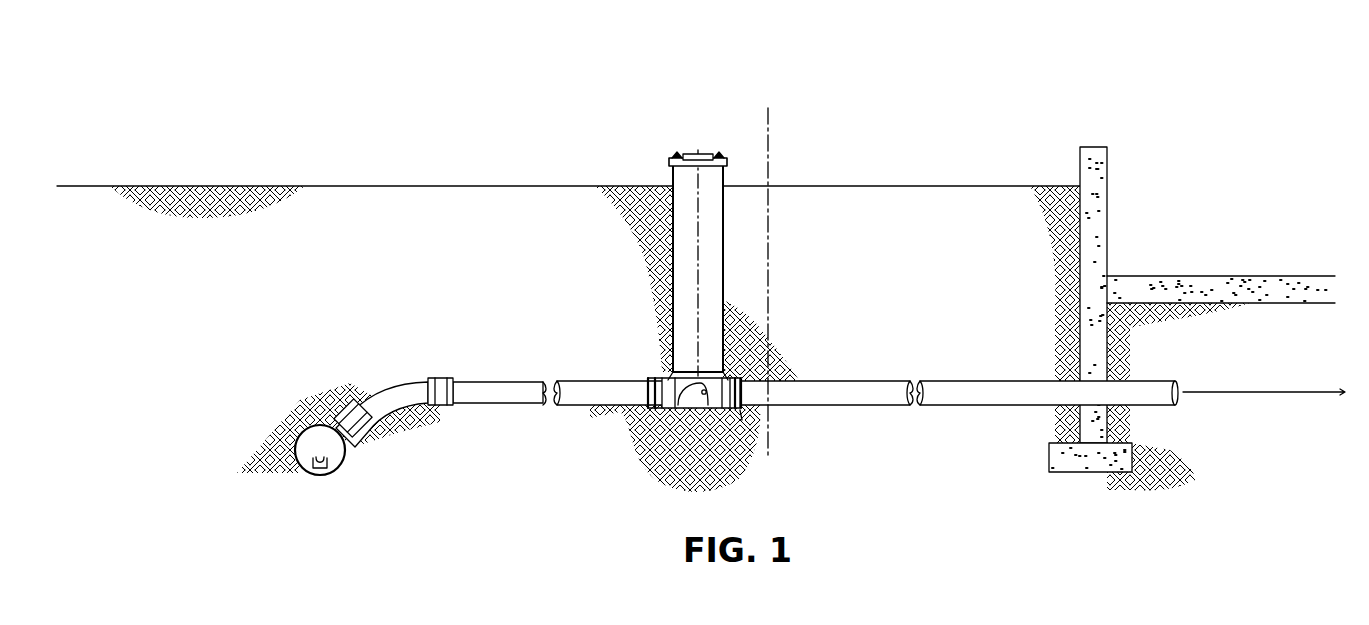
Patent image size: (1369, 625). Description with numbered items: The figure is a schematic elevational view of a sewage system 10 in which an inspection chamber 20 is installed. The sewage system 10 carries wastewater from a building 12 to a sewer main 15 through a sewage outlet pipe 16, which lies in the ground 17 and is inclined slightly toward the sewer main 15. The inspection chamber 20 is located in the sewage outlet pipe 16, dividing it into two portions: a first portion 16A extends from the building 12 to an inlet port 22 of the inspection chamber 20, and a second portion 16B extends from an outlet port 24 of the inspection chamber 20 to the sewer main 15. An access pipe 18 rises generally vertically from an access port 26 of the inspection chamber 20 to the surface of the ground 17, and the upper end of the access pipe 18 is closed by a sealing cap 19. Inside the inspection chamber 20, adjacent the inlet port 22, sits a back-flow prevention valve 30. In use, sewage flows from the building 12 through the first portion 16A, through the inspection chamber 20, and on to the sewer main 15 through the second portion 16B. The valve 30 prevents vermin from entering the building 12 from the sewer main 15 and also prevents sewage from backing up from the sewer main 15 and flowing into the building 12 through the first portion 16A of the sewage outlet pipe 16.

The sewage system 10 is at (808, 76).
The building 12 is at (1080, 157).
The sewer main 15 is at (290, 430).
The sewage outlet pipe 16 is at (950, 405).
The first portion of sewage outlet pipe 16A is at (875, 381).
The second portion of sewage outlet pipe 16B is at (505, 381).
The ground 17 is at (680, 338).
The access pipe 18 is at (723, 198).
The sealing cap 19 is at (712, 158).
The inspection chamber 20 is at (667, 378).
The inlet port 22 is at (760, 410).
The outlet port 24 is at (632, 405).
The access port 26 is at (670, 352).
The back-flow prevention valve 30 is at (738, 412).